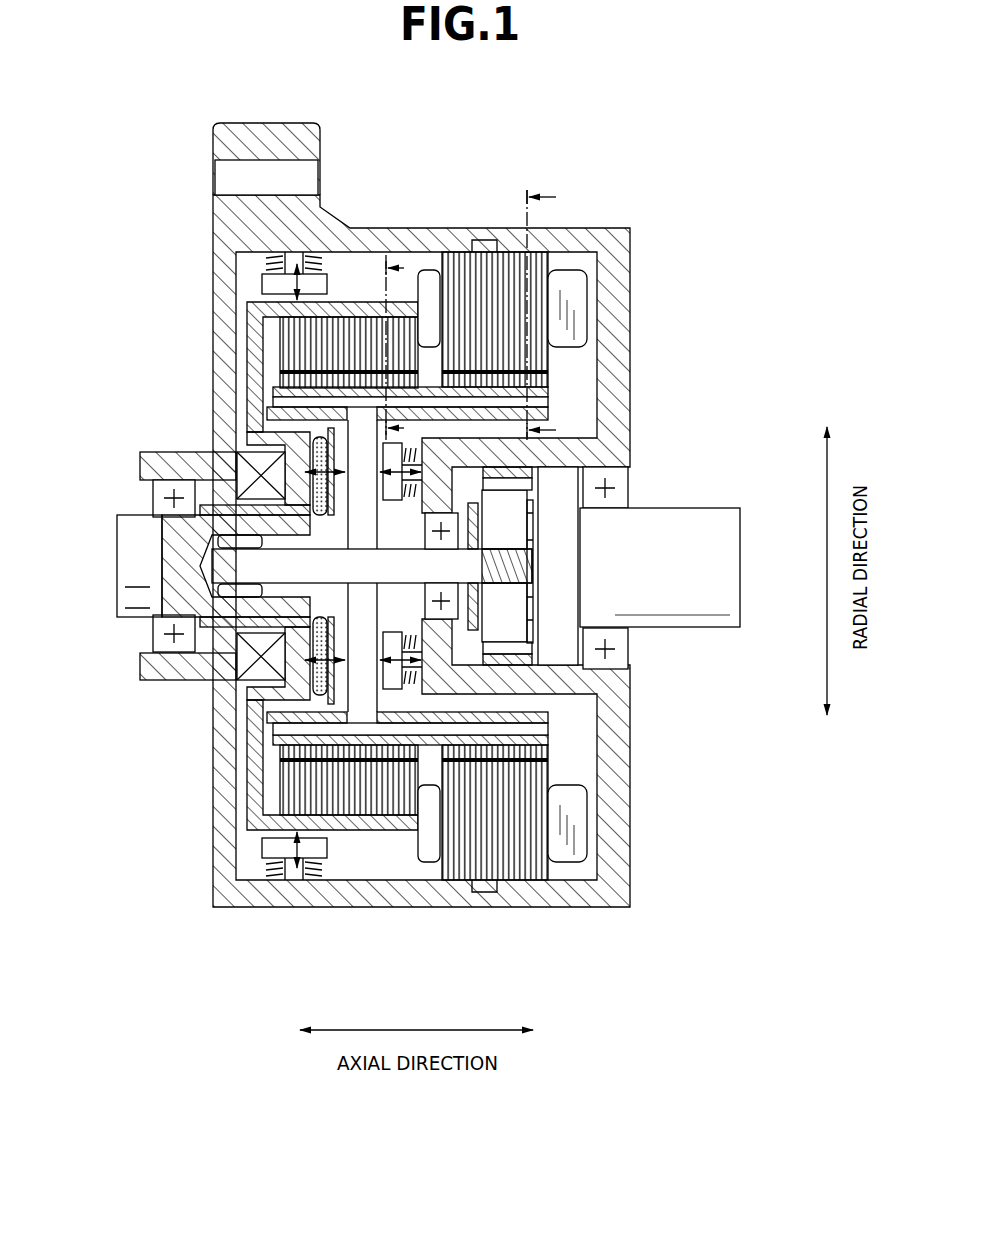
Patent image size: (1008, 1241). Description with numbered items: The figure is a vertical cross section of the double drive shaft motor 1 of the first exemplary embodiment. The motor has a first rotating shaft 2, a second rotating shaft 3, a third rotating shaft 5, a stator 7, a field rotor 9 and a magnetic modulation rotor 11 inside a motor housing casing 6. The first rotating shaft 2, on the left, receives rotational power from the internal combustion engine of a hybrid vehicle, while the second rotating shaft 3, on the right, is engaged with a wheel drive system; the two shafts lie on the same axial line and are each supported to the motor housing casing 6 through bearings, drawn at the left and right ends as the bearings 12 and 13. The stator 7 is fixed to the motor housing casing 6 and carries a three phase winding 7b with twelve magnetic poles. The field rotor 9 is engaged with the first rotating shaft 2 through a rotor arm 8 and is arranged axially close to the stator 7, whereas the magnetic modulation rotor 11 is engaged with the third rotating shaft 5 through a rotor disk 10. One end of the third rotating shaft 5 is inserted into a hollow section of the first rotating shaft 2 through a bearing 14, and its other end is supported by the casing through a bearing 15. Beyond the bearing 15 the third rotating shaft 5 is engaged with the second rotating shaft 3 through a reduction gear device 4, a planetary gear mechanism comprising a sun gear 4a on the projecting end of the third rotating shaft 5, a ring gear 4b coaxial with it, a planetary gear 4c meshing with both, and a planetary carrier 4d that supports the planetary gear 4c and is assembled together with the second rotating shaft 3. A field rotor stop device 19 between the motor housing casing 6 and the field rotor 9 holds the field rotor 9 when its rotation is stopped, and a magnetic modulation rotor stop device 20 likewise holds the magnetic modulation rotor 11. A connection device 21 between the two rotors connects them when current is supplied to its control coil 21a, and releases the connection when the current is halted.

The double drive shaft motor 1 is at (630, 138).
The first rotating shaft 2 is at (120, 588).
The second rotating shaft 3 is at (723, 598).
The reduction gear device 4 is at (551, 493).
The sun gear 4a is at (516, 547).
The ring gear 4b is at (553, 670).
The planetary gear 4c is at (516, 607).
The planetary carrier 4d is at (568, 570).
The third rotating shaft 5 is at (227, 677).
The motor housing casing 6 is at (222, 216).
The stator 7 is at (566, 266).
The three phase winding 7b is at (578, 300).
The rotor arm 8 is at (253, 332).
The field rotor 9 is at (345, 307).
The rotor disk 10 is at (317, 680).
The magnetic modulation rotor 11 is at (558, 387).
The bearing 12 is at (158, 642).
The bearing 13 is at (623, 655).
The bearing 14 is at (143, 453).
The bearing 15 is at (437, 610).
The field rotor stop device 19 is at (253, 267).
The magnetic modulation rotor stop device 20 is at (395, 702).
The connection device 21 is at (277, 410).
The control coil 21a is at (260, 460).